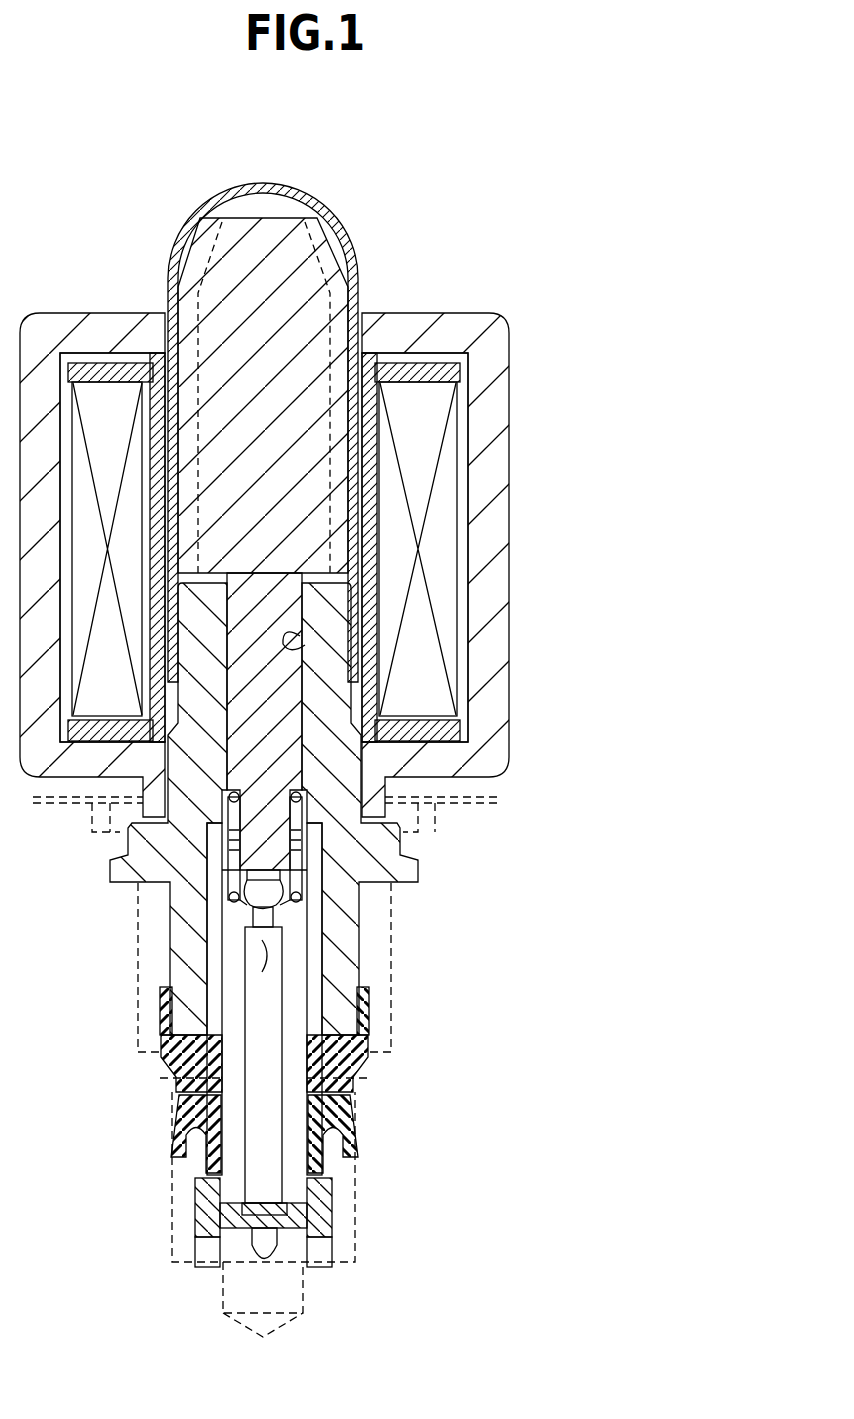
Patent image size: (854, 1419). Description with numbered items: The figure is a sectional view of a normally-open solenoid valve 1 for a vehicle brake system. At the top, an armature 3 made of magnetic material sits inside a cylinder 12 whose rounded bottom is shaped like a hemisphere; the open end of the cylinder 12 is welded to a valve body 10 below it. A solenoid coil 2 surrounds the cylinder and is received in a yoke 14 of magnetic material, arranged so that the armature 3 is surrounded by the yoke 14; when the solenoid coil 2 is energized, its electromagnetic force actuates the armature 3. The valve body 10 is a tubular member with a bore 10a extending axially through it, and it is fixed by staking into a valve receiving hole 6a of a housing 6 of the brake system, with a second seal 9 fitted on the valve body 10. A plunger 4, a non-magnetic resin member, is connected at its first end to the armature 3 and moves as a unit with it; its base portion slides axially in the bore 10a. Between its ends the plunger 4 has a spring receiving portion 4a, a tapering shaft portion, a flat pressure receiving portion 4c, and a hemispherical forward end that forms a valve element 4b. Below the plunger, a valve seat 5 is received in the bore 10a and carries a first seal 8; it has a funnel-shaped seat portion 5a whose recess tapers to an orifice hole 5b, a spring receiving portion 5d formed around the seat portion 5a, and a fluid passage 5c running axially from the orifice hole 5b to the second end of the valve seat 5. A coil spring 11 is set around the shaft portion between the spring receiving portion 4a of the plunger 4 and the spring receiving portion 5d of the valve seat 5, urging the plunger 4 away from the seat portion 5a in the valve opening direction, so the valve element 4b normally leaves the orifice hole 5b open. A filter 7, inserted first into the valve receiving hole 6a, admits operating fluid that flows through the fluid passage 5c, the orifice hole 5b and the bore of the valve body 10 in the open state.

The solenoid valve 1 is at (466, 186).
The solenoid coil 2 is at (448, 497).
The armature 3 is at (292, 270).
The plunger 4 is at (290, 717).
The spring receiving portion 4a is at (222, 812).
The valve element 4b is at (236, 892).
The pressure receiving portion 4c is at (222, 877).
The valve seat 5 is at (230, 1194).
The seat portion 5a is at (322, 840).
The orifice hole 5b is at (273, 955).
The fluid passage 5c is at (268, 978).
The spring receiving portion 5d is at (252, 908).
The housing 6 is at (470, 798).
The valve receiving hole 6a is at (382, 912).
The filter 7 is at (325, 1207).
The first seal 8 is at (343, 1102).
The second seal 9 is at (357, 1088).
The valve body 10 is at (178, 962).
The bore 10a is at (300, 636).
The coil spring 11 is at (222, 838).
The cylinder 12 is at (318, 198).
The yoke 14 is at (500, 396).